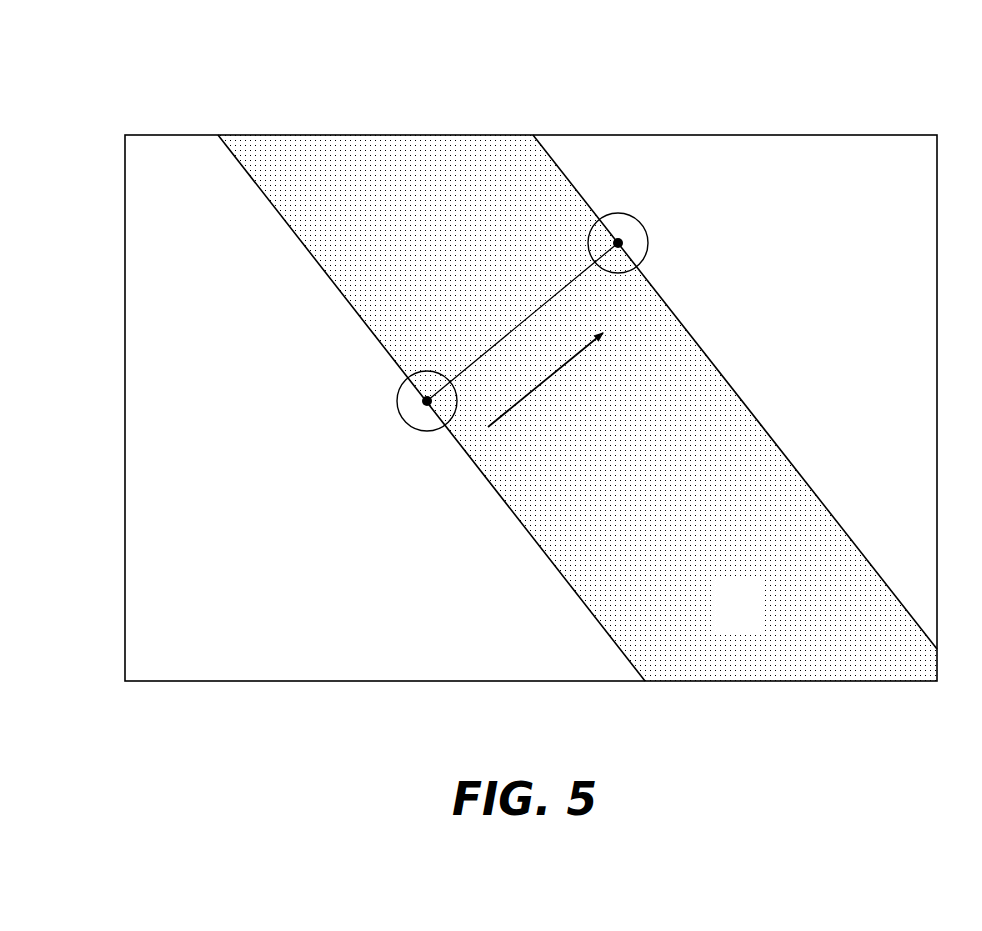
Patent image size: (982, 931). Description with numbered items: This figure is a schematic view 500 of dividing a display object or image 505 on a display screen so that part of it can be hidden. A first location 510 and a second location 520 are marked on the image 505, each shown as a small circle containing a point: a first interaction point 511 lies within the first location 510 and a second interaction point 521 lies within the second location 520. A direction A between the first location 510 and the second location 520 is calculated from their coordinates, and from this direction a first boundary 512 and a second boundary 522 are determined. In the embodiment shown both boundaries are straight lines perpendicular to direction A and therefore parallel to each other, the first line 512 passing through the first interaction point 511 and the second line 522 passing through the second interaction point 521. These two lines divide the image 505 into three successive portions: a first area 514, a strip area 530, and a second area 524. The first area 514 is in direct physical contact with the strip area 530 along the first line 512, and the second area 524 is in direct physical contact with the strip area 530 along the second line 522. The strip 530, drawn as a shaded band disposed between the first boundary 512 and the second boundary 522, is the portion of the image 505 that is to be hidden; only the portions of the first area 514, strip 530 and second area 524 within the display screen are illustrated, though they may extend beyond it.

The schematic view 500 is at (272, 87).
The display object or image 505 is at (923, 133).
The first location 510 is at (423, 432).
The first interaction point 511 is at (427, 401).
The first boundary 512 is at (297, 236).
The first area 514 is at (262, 603).
The second location 520 is at (649, 243).
The second interaction point 521 is at (618, 243).
The second boundary 522 is at (561, 173).
The second area 524 is at (875, 197).
The strip area 530 is at (762, 600).